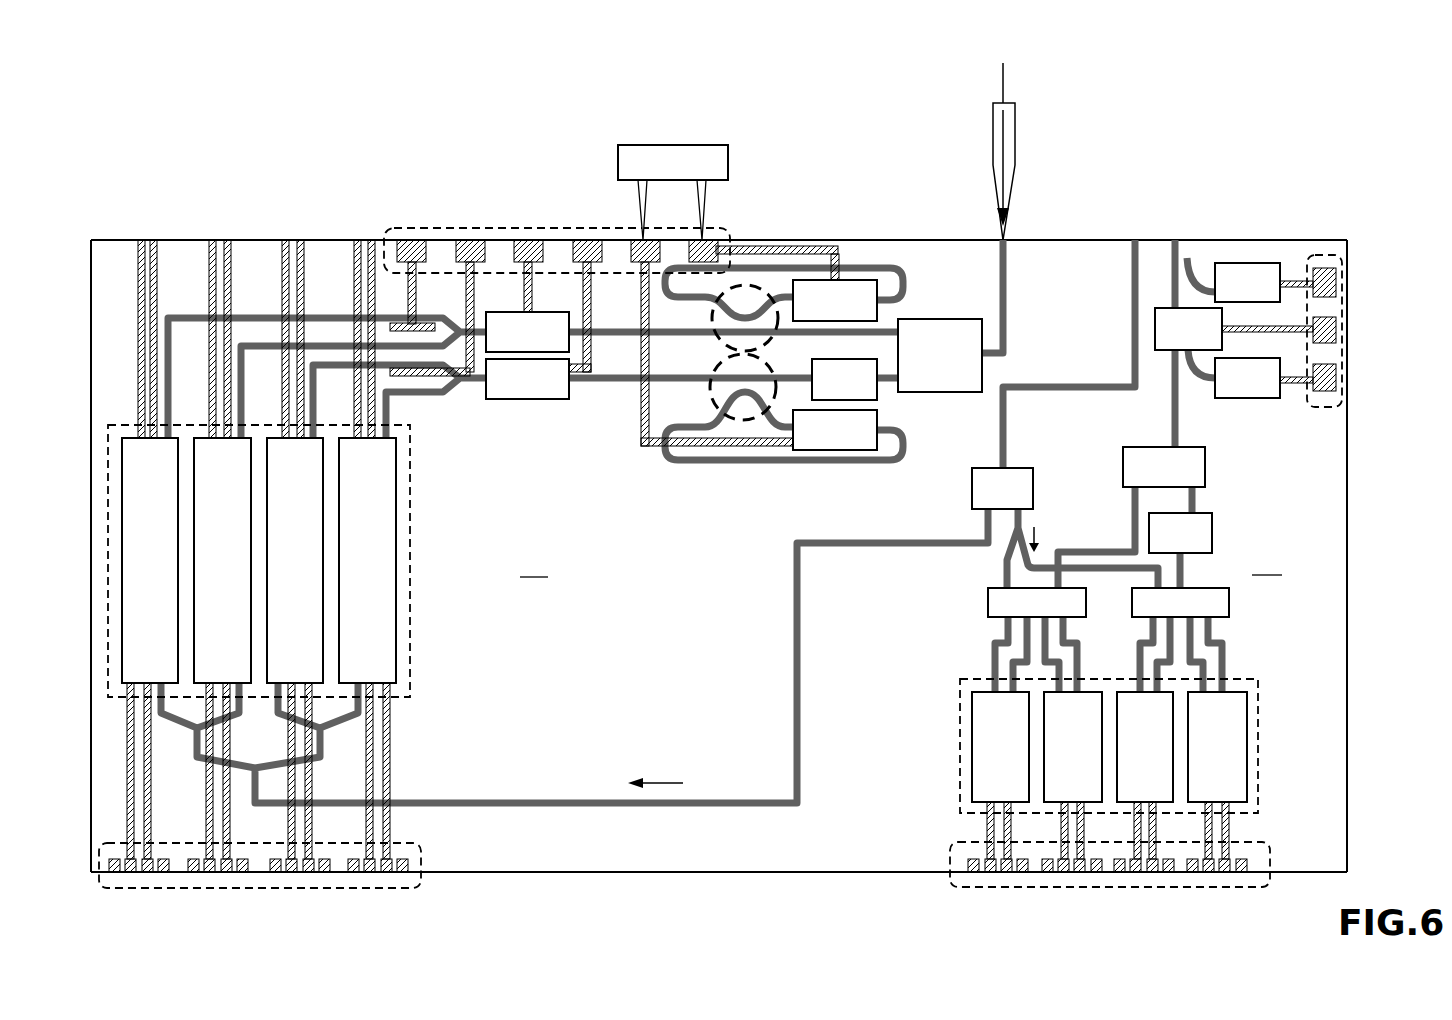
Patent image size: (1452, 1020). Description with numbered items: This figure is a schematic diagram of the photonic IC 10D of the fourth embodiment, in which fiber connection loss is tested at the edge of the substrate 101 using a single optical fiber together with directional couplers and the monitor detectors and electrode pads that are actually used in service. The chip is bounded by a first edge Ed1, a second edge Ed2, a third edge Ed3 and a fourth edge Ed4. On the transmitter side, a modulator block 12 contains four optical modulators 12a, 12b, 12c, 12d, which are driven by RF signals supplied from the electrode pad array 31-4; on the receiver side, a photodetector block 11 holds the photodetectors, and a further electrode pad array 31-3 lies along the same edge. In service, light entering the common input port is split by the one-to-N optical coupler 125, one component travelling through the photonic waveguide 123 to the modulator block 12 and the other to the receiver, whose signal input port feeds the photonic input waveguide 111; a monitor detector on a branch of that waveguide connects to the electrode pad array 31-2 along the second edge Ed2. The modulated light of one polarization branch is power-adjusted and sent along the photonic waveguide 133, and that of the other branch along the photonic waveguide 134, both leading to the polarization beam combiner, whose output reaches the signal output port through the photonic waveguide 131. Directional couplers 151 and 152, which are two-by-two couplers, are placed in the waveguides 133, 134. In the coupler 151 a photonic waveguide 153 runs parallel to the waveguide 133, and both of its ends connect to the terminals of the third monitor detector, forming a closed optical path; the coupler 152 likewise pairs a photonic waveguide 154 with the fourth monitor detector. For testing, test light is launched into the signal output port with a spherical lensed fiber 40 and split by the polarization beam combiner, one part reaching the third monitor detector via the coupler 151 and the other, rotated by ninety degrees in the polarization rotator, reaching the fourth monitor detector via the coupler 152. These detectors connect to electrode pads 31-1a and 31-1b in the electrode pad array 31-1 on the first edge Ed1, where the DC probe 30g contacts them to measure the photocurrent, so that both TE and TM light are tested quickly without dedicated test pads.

The photonic IC 10D is at (140, 93).
The substrate 101 is at (1243, 238).
The first edge Ed1 is at (327, 240).
The second edge Ed2 is at (1347, 282).
The third edge Ed3 is at (468, 875).
The fourth edge Ed4 is at (91, 300).
The photodetector block 11 is at (960, 708).
The modulator block 12 is at (412, 518).
The optical modulator 12a is at (130, 435).
The optical modulator 12b is at (200, 435).
The optical modulator 12c is at (275, 435).
The optical modulator 12d is at (347, 435).
The DC probe 30g is at (676, 144).
The electrode pad array 31-1 is at (442, 228).
The electrode pad 31-1a is at (706, 240).
The electrode pad 31-1b is at (633, 240).
The electrode pad array 31-2 is at (1325, 255).
The third electrode pad group 31-3 is at (1110, 887).
The electrode pad array 31-4 is at (258, 888).
The spherical lensed fiber 40 is at (993, 135).
The photonic input waveguide 111 is at (1177, 422).
The photonic waveguide 123 is at (797, 650).
The 1:N optical coupler 125 is at (970, 493).
The photonic waveguide 131 is at (1003, 272).
The photonic waveguide 133 is at (617, 330).
The photonic waveguide 134 is at (608, 383).
The directional coupler 151 is at (767, 300).
The directional coupler 152 is at (753, 410).
The photonic waveguide 153 is at (745, 318).
The photonic waveguide 154 is at (740, 412).